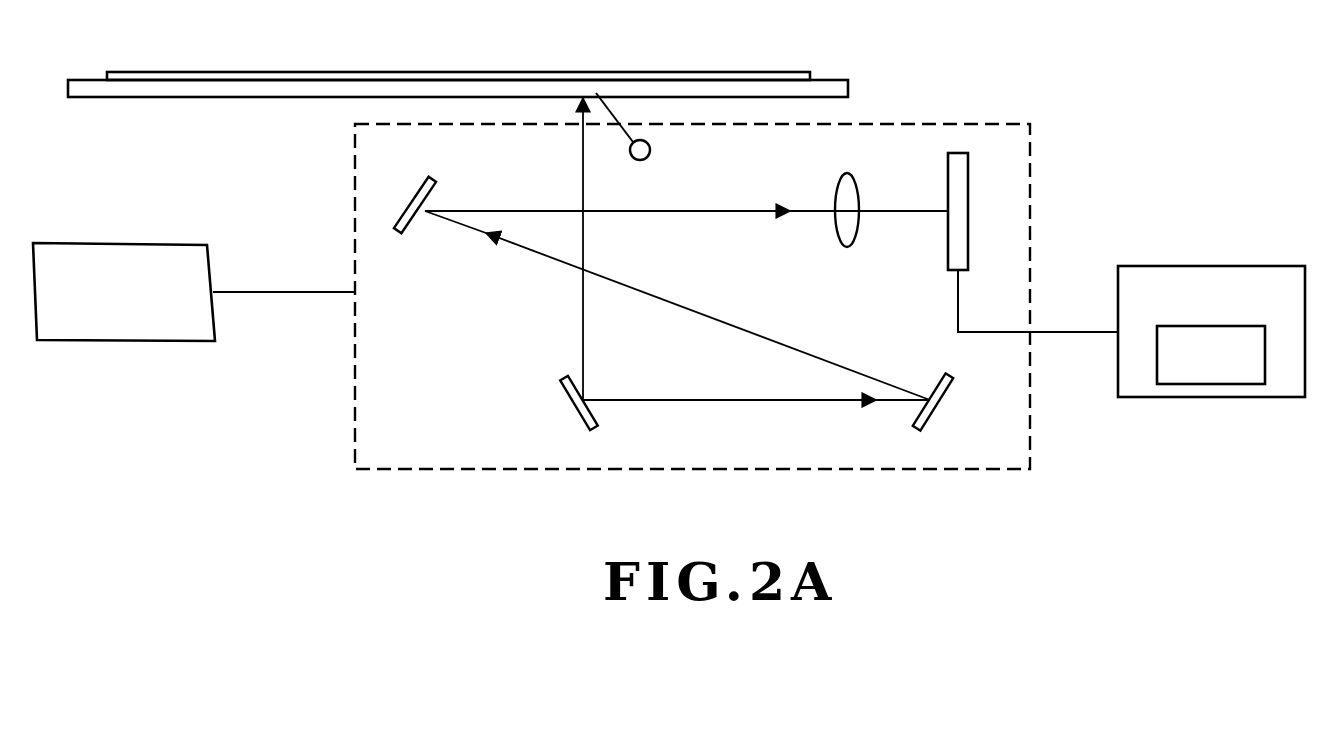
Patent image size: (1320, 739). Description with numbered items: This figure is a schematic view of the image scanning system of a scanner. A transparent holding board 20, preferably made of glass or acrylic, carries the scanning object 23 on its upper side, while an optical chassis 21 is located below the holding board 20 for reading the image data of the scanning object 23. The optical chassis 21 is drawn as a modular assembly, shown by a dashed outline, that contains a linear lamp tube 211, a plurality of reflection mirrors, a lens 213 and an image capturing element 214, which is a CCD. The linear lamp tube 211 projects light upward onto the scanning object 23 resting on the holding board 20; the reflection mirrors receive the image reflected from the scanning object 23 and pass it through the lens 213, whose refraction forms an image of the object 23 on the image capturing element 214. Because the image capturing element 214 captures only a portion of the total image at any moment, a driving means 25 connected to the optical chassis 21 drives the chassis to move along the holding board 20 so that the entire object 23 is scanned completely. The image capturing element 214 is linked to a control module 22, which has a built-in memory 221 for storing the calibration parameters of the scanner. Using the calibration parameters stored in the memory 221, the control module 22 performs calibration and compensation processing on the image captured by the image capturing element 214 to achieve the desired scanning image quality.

The transparent holding board 20 is at (90, 97).
The scanning object 23 is at (182, 72).
The optical chassis 21 is at (352, 395).
The linear lamp tube 211 is at (647, 158).
The lens 213 is at (845, 248).
The image capturing element 214 is at (958, 224).
The control module 22 is at (1194, 265).
The memory 221 is at (1210, 385).
The driving means 25 is at (78, 344).